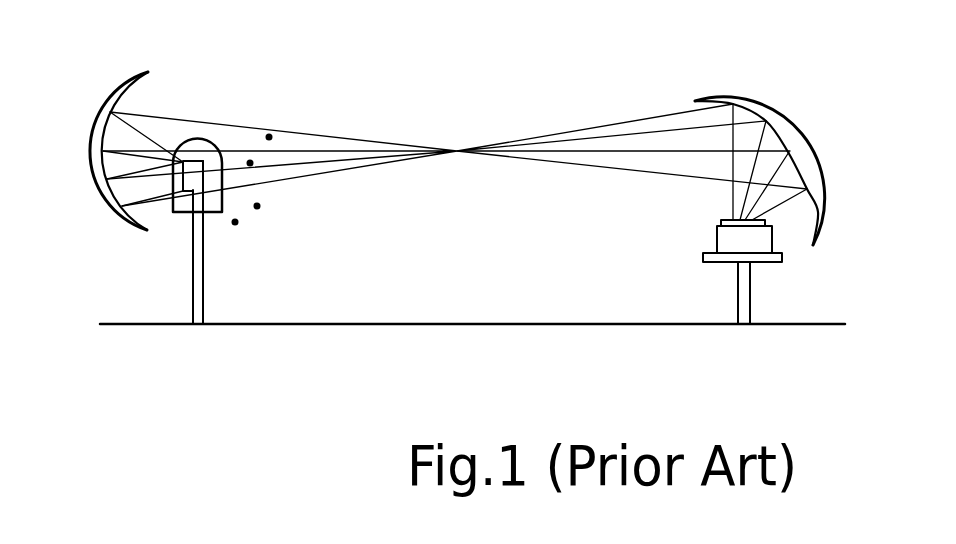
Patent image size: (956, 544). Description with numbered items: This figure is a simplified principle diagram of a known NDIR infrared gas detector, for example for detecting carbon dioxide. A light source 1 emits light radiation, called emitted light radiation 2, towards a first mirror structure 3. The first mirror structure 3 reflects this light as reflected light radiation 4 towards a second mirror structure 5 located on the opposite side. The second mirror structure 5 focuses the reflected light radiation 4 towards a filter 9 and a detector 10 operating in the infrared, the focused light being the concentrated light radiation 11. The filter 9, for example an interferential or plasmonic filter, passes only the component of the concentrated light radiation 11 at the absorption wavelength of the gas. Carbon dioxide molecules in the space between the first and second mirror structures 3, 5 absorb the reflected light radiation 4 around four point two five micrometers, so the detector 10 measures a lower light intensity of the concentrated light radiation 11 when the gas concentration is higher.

The light source 1 is at (193, 157).
The emitted light radiation 2 is at (143, 131).
The first mirror structure 3 is at (104, 99).
The reflected light radiation 4 is at (370, 163).
The second mirror structure 5 is at (785, 119).
The filter 9 is at (724, 221).
The detector 10 is at (765, 238).
The concentrated light radiation 11 is at (807, 190).